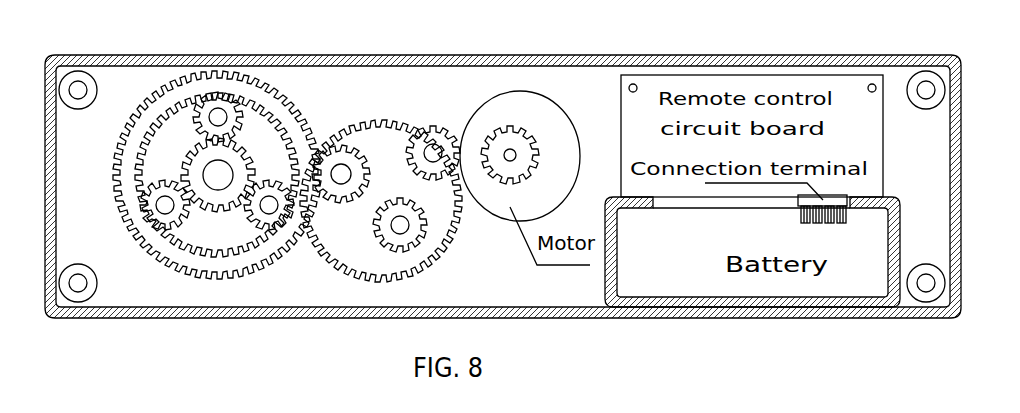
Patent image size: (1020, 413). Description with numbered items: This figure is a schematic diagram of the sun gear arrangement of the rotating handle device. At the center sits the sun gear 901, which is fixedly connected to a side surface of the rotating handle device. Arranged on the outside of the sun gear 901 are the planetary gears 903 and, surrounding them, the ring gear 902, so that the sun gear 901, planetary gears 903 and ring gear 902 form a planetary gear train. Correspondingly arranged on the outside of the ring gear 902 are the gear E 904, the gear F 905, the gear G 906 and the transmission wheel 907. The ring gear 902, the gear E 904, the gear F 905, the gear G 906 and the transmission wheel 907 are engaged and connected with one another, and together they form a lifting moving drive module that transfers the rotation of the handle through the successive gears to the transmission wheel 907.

The sun gear 901 is at (212, 198).
The ring gear 902 is at (173, 78).
The planetary gear 903 is at (124, 193).
The gear E 904 is at (353, 136).
The gear F 905 is at (450, 250).
The gear G 906 is at (455, 113).
The transmission wheel 907 is at (528, 148).